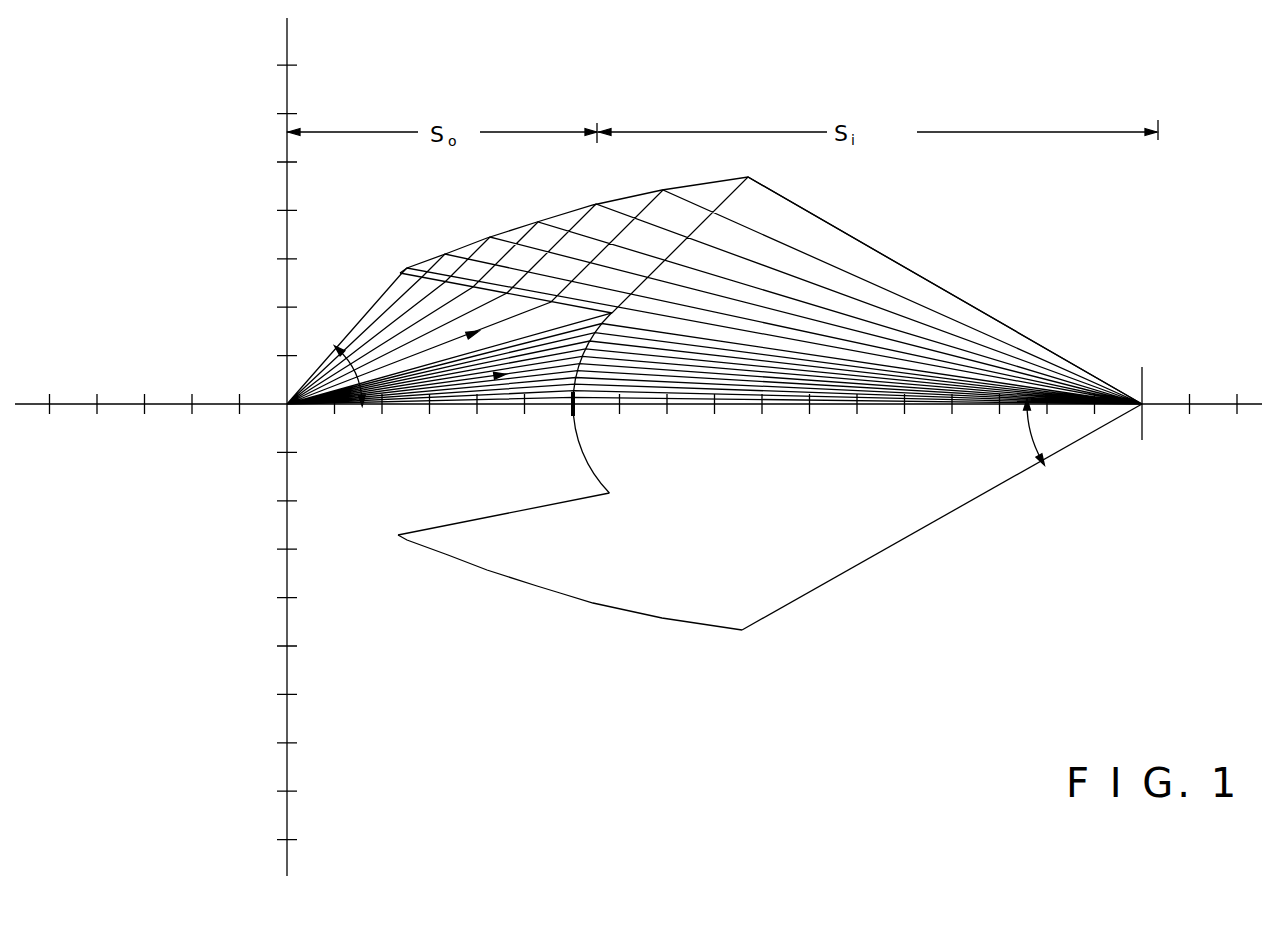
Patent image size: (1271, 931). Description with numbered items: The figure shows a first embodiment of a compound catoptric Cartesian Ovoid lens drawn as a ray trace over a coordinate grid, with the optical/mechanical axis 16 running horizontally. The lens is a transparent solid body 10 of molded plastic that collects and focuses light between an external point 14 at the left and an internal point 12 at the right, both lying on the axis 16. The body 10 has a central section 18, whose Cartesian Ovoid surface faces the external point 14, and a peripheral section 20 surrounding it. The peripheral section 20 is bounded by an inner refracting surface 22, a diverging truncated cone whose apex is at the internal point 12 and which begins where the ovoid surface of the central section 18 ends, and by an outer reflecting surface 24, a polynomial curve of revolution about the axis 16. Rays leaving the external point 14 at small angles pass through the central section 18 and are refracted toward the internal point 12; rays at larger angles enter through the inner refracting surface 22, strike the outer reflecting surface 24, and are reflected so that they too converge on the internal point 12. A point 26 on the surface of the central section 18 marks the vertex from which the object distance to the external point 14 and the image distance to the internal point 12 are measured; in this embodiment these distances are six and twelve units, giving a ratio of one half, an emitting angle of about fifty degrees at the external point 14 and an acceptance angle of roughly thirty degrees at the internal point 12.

The transparent solid body 10 is at (727, 647).
The internal point 12 is at (1144, 400).
The external point 14 is at (287, 404).
The optical/mechanical axis 16 is at (1209, 400).
The central section 18 is at (585, 462).
The peripheral section 20 is at (516, 581).
The inner refracting surface 22 is at (467, 518).
The outer reflecting surface 24 is at (614, 603).
The surface point 26 is at (584, 406).